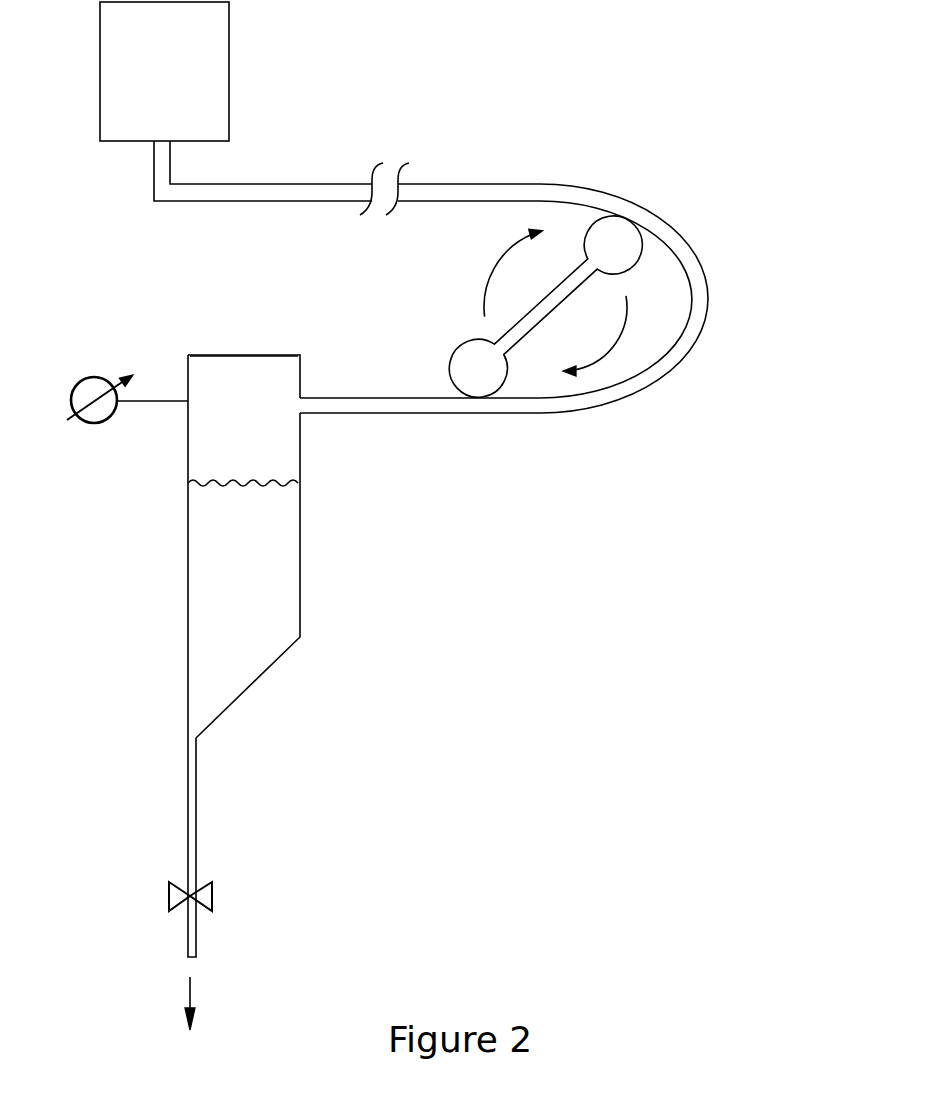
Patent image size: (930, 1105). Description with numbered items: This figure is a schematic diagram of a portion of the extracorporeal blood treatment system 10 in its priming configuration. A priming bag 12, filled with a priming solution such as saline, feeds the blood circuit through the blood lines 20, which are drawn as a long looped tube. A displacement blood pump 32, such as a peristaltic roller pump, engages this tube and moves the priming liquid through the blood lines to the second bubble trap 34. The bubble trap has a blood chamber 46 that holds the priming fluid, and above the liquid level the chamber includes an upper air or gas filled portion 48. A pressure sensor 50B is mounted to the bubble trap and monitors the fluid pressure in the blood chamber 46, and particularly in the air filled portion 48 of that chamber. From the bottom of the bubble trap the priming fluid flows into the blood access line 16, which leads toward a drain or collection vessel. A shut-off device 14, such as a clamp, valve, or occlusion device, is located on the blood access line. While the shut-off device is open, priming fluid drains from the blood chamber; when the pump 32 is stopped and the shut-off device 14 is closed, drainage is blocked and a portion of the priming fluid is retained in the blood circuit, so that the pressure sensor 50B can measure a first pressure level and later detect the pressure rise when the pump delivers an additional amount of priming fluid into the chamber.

The blood treatment system 10 is at (37, 292).
The priming bag 12 is at (185, 75).
The return line 20 is at (462, 188).
The blood pump 32 is at (567, 287).
The second bubble trap 34 is at (175, 585).
The upper air filled portion 48 is at (224, 372).
The blood chamber 46 is at (265, 602).
The pressure sensor 50B is at (107, 424).
The blood access line 16 is at (187, 808).
The shut-off device 14 is at (212, 895).